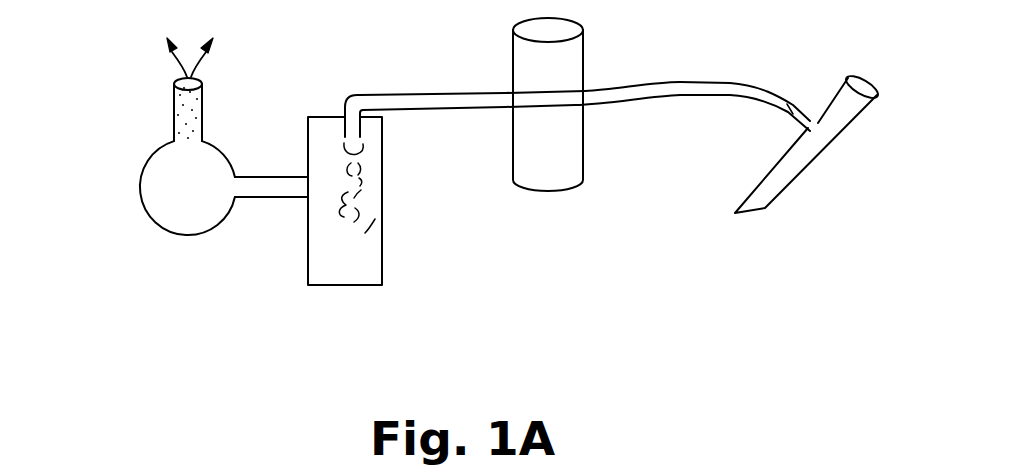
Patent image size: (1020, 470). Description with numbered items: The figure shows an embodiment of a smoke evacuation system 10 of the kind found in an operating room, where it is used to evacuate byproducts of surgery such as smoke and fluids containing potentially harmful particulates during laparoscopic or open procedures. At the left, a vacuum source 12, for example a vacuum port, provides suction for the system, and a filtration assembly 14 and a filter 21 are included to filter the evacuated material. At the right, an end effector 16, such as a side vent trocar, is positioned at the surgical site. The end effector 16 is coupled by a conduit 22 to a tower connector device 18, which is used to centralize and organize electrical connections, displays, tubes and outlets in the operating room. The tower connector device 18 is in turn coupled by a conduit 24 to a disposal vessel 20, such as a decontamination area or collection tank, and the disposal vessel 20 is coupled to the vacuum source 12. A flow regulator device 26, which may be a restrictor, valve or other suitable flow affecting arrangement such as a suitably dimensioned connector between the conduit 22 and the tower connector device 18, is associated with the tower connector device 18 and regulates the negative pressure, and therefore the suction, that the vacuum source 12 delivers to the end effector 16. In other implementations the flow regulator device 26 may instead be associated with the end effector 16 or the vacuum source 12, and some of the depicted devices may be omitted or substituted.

The evacuation system 10 is at (276, 344).
The vacuum source 12 is at (140, 170).
The filtration assembly 14 is at (126, 245).
The end effector 16 is at (813, 123).
The tower connector device 18 is at (518, 187).
The disposal vessel 20 is at (322, 128).
The filter 21 is at (203, 108).
The conduit 22 is at (695, 78).
The conduit 24 is at (440, 112).
The flow regulator device 26 is at (611, 190).